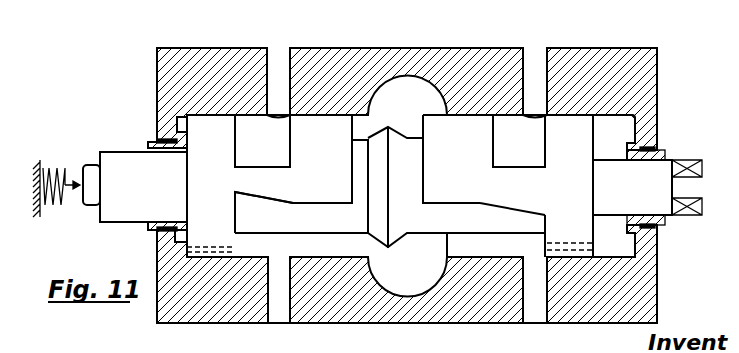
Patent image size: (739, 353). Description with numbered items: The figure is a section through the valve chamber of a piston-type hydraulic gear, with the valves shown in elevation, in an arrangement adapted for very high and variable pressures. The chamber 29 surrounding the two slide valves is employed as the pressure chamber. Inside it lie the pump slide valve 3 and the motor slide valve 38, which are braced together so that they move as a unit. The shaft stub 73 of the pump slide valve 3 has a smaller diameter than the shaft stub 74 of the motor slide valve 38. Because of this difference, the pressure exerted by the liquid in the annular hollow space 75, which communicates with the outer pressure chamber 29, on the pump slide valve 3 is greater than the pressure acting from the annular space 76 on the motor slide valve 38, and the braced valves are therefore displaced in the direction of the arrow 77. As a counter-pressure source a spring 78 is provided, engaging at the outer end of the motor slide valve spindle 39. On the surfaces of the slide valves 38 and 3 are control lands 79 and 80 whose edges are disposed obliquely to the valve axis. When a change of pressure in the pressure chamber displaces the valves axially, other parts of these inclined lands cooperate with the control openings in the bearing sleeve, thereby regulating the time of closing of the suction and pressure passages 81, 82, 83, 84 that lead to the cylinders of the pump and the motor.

The pump slide valve 3 is at (573, 218).
The chamber 29 is at (477, 242).
The motor slide valve 38 is at (252, 218).
The motor slide valve spindle 39 is at (92, 165).
The shaft stub 73 is at (610, 190).
The shaft stub 74 is at (138, 165).
The annular hollow space 75 is at (625, 130).
The annular space 76 is at (180, 122).
The arrow 77 is at (112, 183).
The spring 78 is at (60, 168).
The control land 79 is at (270, 197).
The control land 80 is at (515, 210).
The suction and pressure passage 81 is at (275, 295).
The suction and pressure passage 82 is at (282, 62).
The suction and pressure passage 83 is at (533, 62).
The suction and pressure passage 84 is at (535, 302).